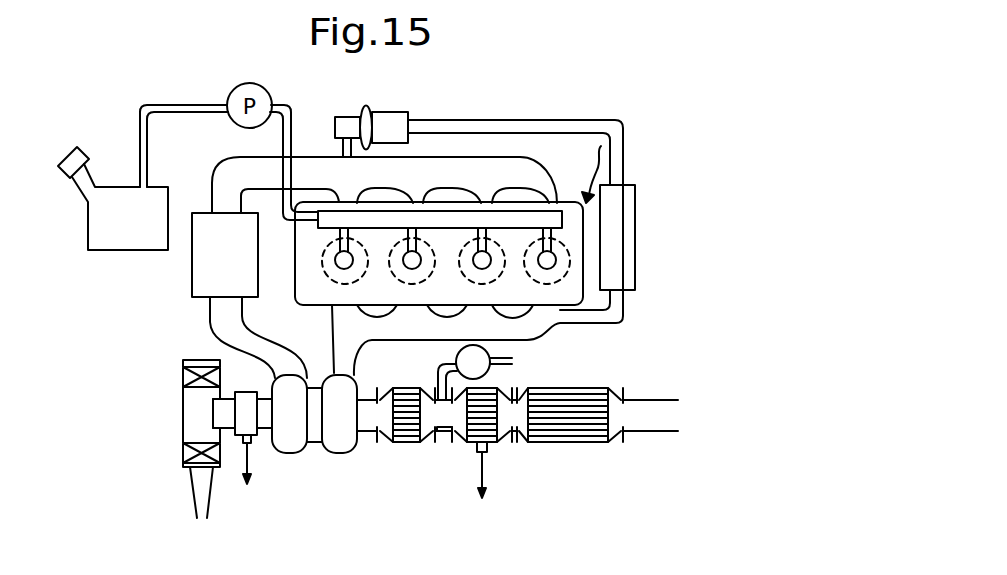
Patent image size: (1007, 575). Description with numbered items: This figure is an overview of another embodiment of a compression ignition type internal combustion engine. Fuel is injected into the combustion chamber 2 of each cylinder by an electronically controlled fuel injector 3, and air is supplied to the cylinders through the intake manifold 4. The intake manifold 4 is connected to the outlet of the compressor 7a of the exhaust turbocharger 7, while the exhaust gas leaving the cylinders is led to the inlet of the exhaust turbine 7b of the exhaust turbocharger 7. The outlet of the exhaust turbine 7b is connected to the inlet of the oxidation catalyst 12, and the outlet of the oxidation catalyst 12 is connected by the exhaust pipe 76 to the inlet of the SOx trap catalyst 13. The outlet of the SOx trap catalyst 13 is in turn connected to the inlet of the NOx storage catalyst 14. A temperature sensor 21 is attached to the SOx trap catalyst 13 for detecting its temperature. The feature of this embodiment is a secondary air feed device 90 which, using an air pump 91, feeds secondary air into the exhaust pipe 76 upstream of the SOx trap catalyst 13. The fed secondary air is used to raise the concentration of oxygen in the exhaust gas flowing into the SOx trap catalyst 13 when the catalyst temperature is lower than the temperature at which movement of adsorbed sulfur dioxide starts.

The combustion chamber 2 is at (330, 278).
The electronically controlled fuel injector 3 is at (334, 256).
The intake manifold 4 is at (525, 173).
The exhaust turbocharger 7 is at (311, 464).
The compressor 7a is at (288, 446).
The exhaust turbine 7b is at (342, 448).
The oxidation catalyst 12 is at (408, 443).
The SOx trap catalyst 13 is at (472, 443).
The NOx storage catalyst 14 is at (563, 437).
The temperature sensor 21 is at (487, 453).
The exhaust pipe 76 is at (443, 436).
The secondary air feed device 90 is at (426, 368).
The air pump 91 is at (492, 350).